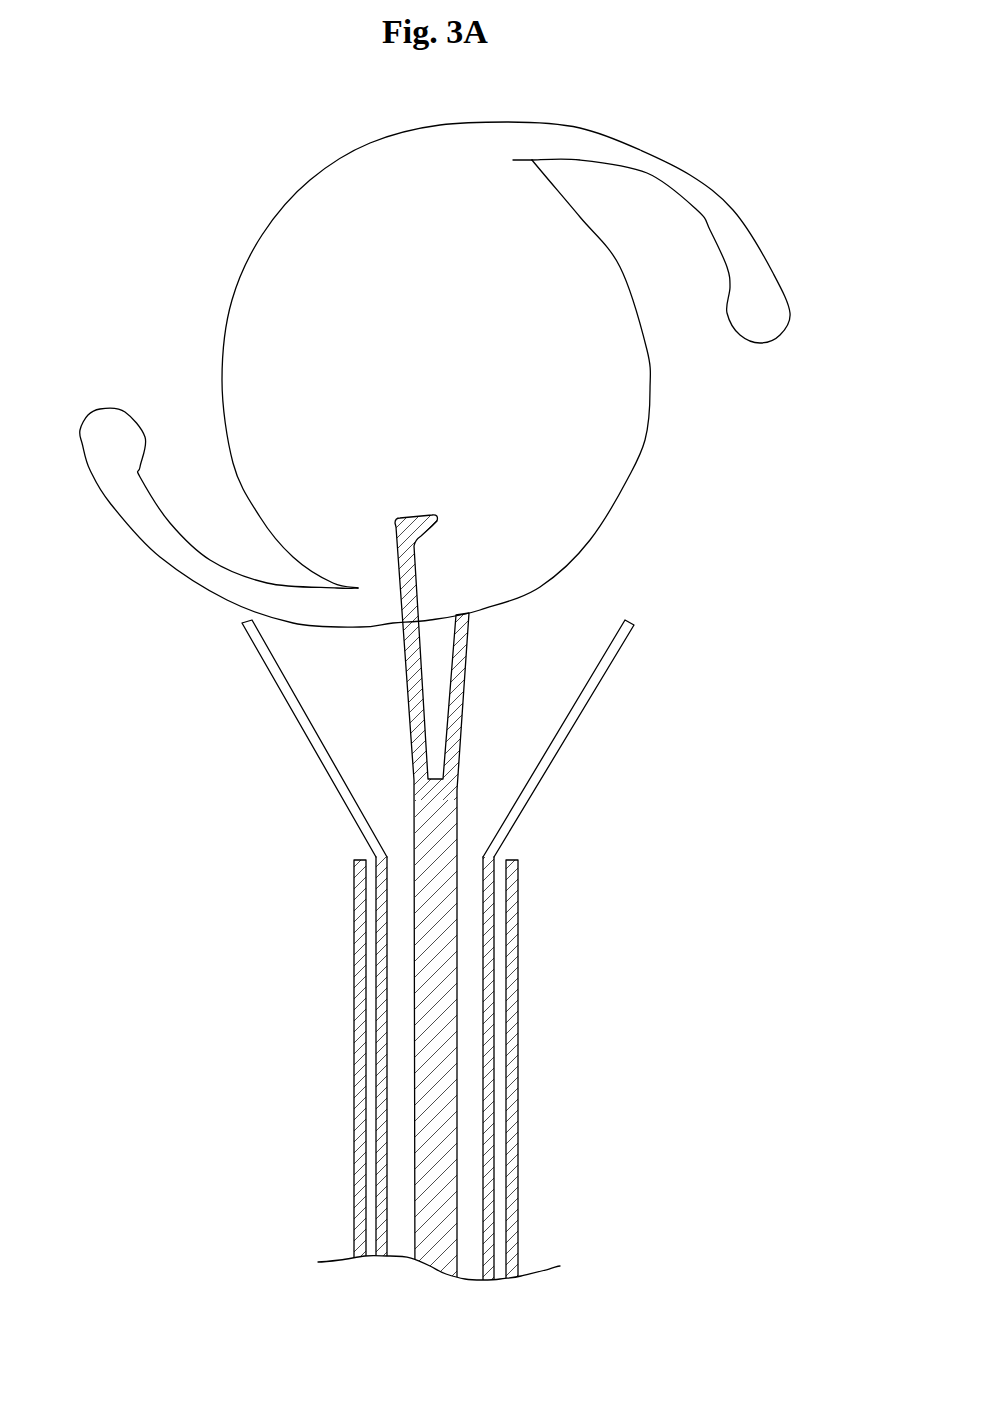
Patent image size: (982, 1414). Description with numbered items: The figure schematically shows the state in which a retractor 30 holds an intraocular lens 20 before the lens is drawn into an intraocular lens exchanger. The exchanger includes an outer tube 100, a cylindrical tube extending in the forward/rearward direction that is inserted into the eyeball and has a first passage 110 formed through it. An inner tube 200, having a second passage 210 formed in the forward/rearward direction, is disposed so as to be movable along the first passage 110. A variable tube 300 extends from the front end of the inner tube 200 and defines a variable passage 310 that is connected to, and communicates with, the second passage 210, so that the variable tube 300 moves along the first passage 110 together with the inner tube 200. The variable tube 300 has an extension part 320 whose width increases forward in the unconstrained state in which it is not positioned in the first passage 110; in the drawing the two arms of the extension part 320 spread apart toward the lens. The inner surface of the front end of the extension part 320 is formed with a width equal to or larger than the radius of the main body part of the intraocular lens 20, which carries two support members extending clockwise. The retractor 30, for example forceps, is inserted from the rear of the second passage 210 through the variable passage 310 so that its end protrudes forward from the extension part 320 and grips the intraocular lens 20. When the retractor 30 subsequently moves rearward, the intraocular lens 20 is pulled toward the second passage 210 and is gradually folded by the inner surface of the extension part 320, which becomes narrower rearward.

The intraocular lens 20 is at (639, 414).
The retractor 30 is at (436, 948).
The outer tube 100 is at (514, 1000).
The first passage 110 is at (490, 1073).
The inner tube 200 is at (491, 1111).
The second passage 210 is at (462, 1198).
The variable tube 300 is at (472, 960).
The variable passage 310 is at (500, 771).
The extension part 320 is at (532, 794).